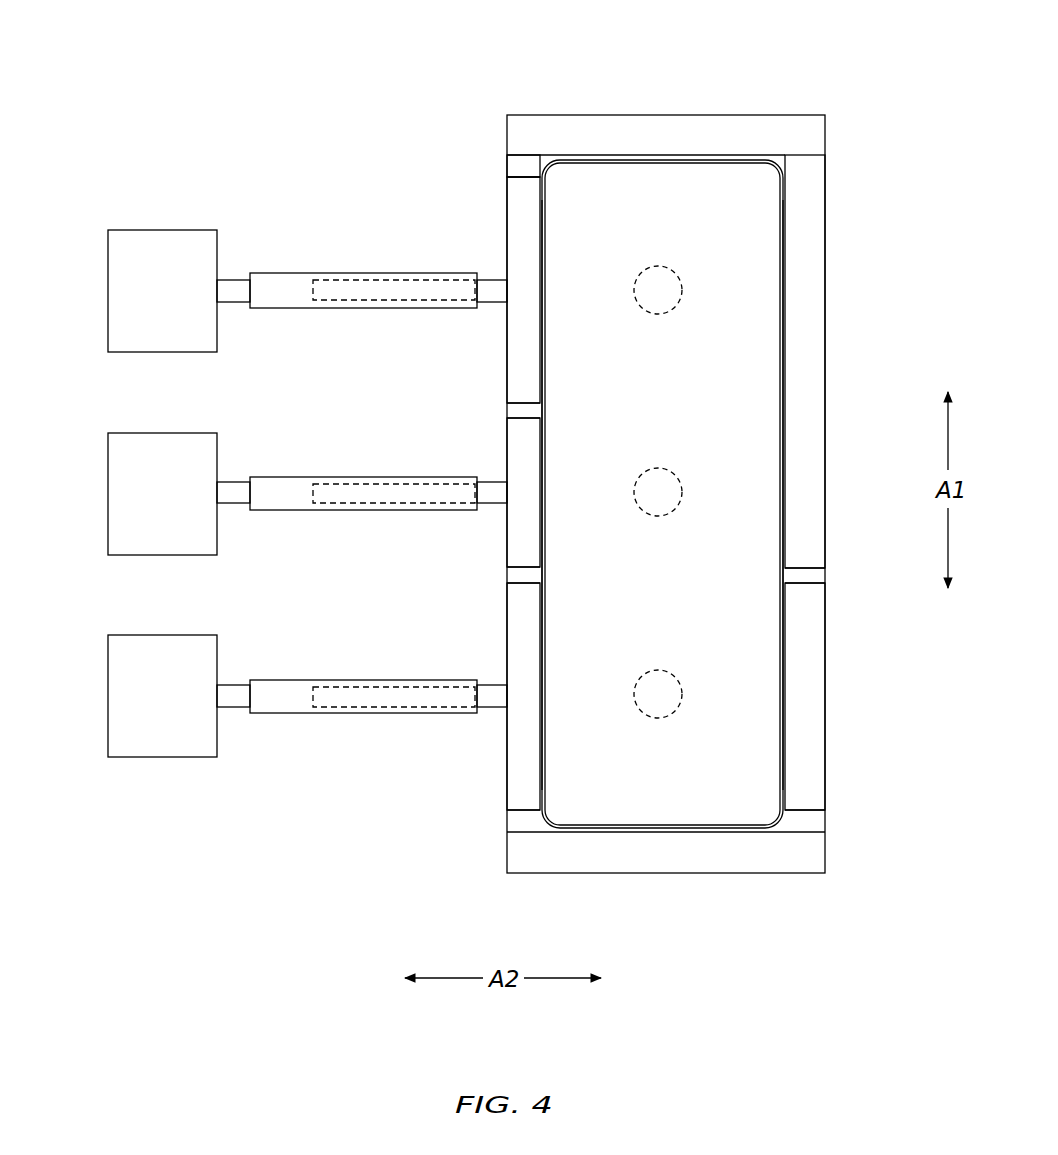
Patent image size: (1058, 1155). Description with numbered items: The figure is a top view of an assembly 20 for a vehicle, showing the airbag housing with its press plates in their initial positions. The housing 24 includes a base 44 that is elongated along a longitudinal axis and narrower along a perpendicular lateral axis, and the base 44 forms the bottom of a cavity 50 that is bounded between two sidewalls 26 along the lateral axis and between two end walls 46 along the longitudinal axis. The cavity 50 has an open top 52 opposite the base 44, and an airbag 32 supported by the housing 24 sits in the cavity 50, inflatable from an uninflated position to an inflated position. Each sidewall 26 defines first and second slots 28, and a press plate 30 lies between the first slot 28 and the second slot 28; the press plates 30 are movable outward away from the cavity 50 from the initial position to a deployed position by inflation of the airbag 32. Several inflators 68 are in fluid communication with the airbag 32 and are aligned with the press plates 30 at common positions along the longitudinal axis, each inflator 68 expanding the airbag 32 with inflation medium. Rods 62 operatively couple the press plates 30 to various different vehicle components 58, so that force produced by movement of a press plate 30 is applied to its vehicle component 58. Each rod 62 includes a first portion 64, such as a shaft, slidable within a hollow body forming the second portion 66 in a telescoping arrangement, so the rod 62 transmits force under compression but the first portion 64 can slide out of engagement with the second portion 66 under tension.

The assembly 20 is at (262, 76).
The housing 24 is at (825, 115).
The sidewall 26 is at (517, 372).
The slot 28 is at (506, 168).
The press plate 30 is at (520, 215).
The airbag 32 is at (760, 450).
The base 44 is at (527, 165).
The end wall 46 is at (657, 135).
The cavity 50 is at (602, 194).
The open top 52 is at (736, 194).
The vehicle component 58 is at (106, 245).
The rod 62 is at (330, 240).
The first portion 64 is at (487, 279).
The second portion 66 is at (290, 272).
The inflator 68 is at (680, 305).